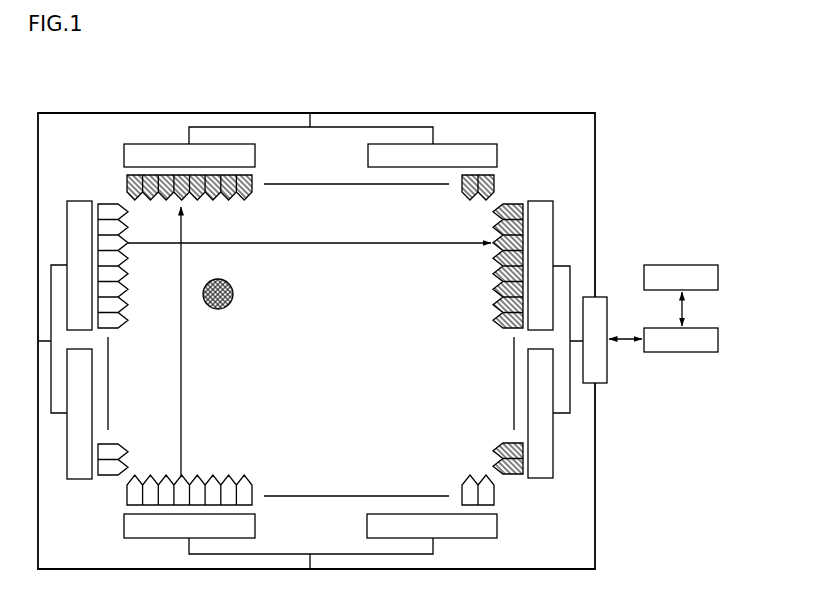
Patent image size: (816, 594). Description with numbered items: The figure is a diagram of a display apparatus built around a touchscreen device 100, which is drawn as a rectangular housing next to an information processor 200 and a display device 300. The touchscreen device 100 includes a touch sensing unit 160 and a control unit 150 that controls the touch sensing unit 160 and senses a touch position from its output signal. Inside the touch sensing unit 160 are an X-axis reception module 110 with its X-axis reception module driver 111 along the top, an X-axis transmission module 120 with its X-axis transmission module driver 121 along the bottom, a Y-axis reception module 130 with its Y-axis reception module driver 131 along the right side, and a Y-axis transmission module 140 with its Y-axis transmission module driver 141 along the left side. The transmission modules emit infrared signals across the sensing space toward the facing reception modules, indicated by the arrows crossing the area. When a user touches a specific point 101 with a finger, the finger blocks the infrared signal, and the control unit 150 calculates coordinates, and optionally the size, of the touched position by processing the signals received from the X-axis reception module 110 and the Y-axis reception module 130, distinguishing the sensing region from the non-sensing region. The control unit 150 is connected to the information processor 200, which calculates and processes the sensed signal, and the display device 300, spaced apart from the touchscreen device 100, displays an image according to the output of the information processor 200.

The touchscreen device 100 is at (345, 88).
The specific point 101 is at (234, 294).
The X-axis reception module 110 is at (499, 181).
The X-axis reception module driver 111 is at (157, 139).
The X-axis transmission module 120 is at (253, 477).
The X-axis transmission module driver 121 is at (119, 517).
The Y-axis reception module 130 is at (515, 481).
The Y-axis reception module driver 131 is at (544, 191).
The Y-axis transmission module 140 is at (125, 442).
The Y-axis transmission module driver 141 is at (80, 197).
The control unit 150 is at (605, 287).
The touch sensing unit 160 is at (489, 107).
The information processor 200 is at (720, 340).
The display device 300 is at (720, 277).